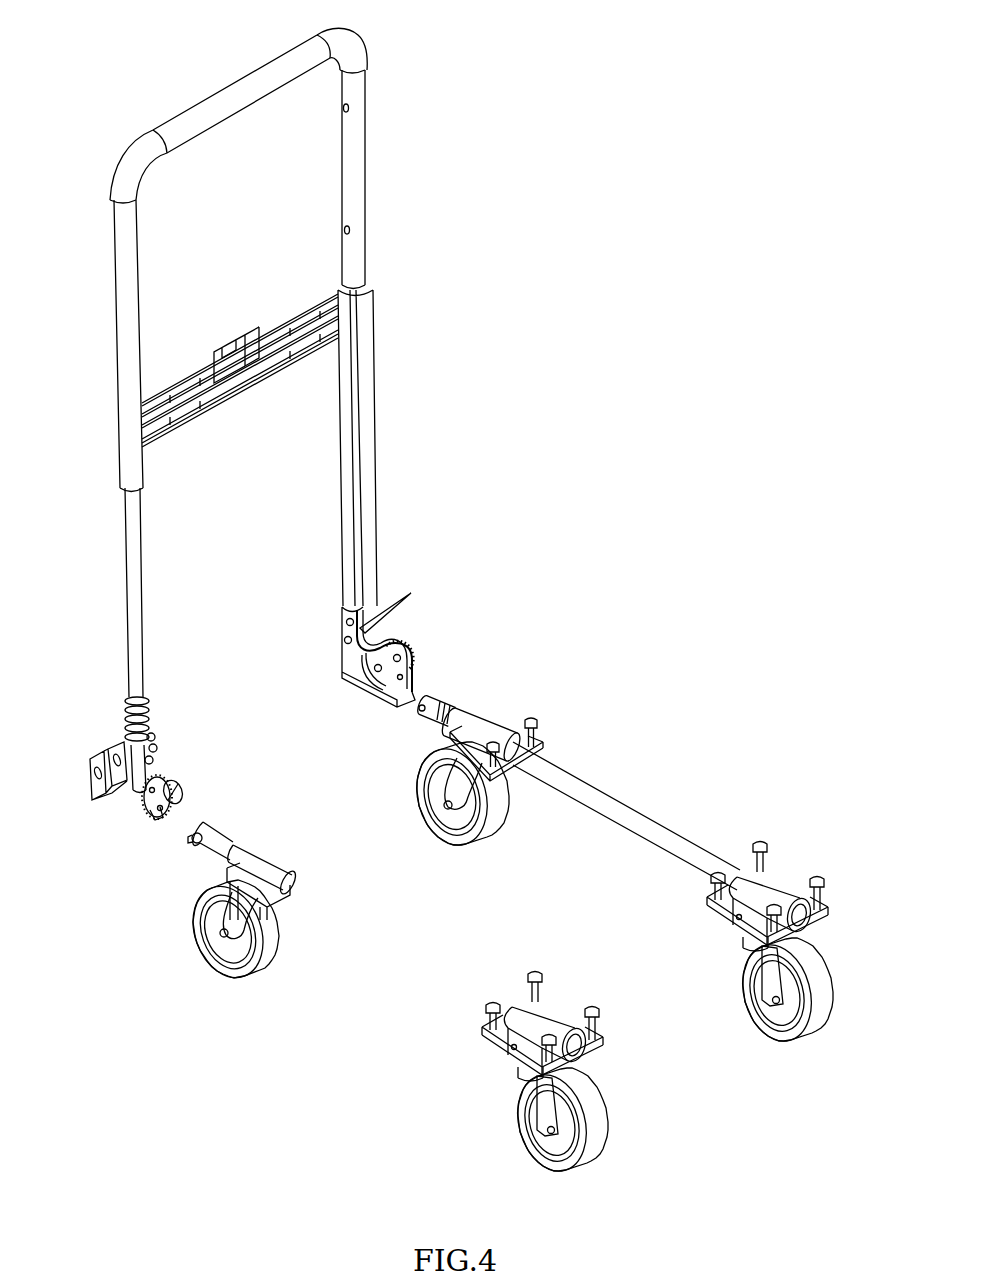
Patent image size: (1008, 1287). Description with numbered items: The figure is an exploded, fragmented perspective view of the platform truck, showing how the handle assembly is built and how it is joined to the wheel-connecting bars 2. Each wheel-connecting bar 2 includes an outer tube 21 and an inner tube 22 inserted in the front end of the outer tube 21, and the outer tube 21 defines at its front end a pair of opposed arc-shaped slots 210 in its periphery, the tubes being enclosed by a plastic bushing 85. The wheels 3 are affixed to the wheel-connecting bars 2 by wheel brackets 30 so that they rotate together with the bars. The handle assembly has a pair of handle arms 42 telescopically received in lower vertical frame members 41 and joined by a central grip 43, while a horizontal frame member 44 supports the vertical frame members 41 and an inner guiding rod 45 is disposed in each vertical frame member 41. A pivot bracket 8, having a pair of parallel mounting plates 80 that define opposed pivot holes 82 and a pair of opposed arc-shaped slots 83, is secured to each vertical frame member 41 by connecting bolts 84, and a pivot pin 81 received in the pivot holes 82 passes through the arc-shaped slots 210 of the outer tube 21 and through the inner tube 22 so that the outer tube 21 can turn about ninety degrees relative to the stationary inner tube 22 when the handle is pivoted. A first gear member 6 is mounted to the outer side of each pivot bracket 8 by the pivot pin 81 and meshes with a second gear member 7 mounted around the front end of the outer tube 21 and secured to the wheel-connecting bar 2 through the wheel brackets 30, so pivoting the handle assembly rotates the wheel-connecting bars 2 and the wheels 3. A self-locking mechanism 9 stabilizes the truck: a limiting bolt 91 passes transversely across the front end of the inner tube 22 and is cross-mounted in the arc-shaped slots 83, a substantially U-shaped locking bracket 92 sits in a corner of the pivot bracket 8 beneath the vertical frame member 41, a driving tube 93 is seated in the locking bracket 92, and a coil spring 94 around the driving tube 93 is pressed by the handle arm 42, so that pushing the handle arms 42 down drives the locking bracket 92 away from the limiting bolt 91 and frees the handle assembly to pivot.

The wheel-connecting bar 2 is at (545, 766).
The outer tube 21 is at (586, 790).
The inner tube 22 is at (268, 866).
The arc-shaped slot 210 is at (430, 725).
The wheel 3 is at (763, 992).
The wheel bracket 30 is at (757, 898).
The vertical frame member 41 is at (368, 432).
The handle arm 42 is at (130, 310).
The central grip 43 is at (188, 113).
The horizontal frame member 44 is at (177, 385).
The inner guiding rod 45 is at (135, 600).
The first gear member 6 is at (158, 818).
The second gear member 7 is at (207, 884).
The pivot bracket 8 is at (370, 670).
The mounting plate 80 is at (362, 630).
The pivot pin 81 is at (150, 802).
The pivot hole 82 is at (405, 648).
The arc-shaped slot 83 is at (385, 685).
The connecting bolt 84 is at (342, 620).
The plastic bushing 85 is at (168, 788).
The self-locking mechanism 9 is at (156, 764).
The limiting bolt 91 is at (194, 843).
The locking bracket 92 is at (110, 797).
The driving tube 93 is at (137, 710).
The coil spring 94 is at (150, 730).